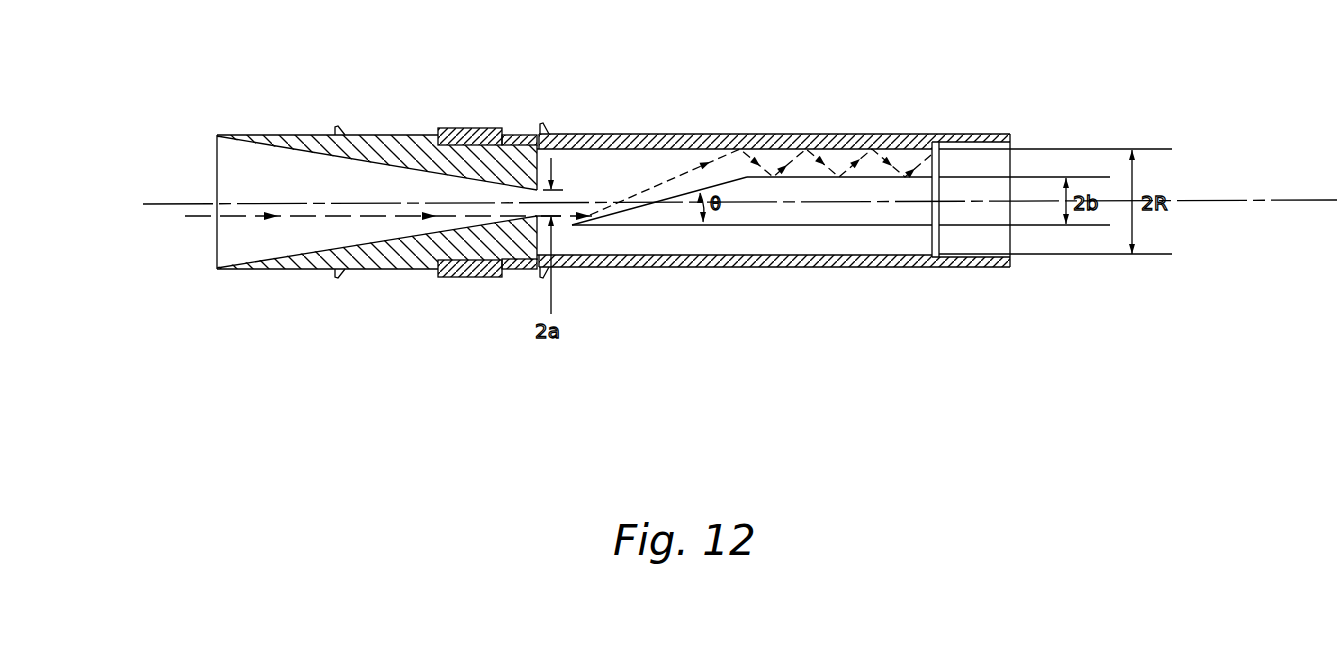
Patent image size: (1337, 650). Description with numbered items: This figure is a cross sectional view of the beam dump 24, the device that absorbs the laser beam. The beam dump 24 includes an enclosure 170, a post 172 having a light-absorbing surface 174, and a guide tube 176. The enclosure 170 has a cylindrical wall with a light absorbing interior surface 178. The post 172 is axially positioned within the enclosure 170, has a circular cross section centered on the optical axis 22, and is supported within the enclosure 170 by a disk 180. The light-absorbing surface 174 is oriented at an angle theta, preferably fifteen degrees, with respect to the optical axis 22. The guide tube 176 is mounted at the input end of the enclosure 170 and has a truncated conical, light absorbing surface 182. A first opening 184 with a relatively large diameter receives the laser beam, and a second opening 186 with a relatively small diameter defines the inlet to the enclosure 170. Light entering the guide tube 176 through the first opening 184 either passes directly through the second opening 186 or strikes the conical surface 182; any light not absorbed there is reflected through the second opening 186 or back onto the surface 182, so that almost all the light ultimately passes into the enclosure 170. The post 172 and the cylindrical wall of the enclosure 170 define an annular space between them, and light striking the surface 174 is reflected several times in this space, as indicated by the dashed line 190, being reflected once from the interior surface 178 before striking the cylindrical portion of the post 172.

The optical axis 22 is at (1237, 200).
The beam dump 24 is at (793, 92).
The enclosure 170 is at (778, 272).
The post 172 is at (863, 226).
The light-absorbing surface 174 is at (699, 189).
The guide tube 176 is at (412, 134).
The light absorbing interior surface 178 is at (600, 150).
The disk 180 is at (940, 157).
The truncated conical light absorbing surface 182 is at (258, 262).
The first opening 184 is at (217, 175).
The second opening 186 is at (534, 190).
The dashed line 190 is at (886, 160).